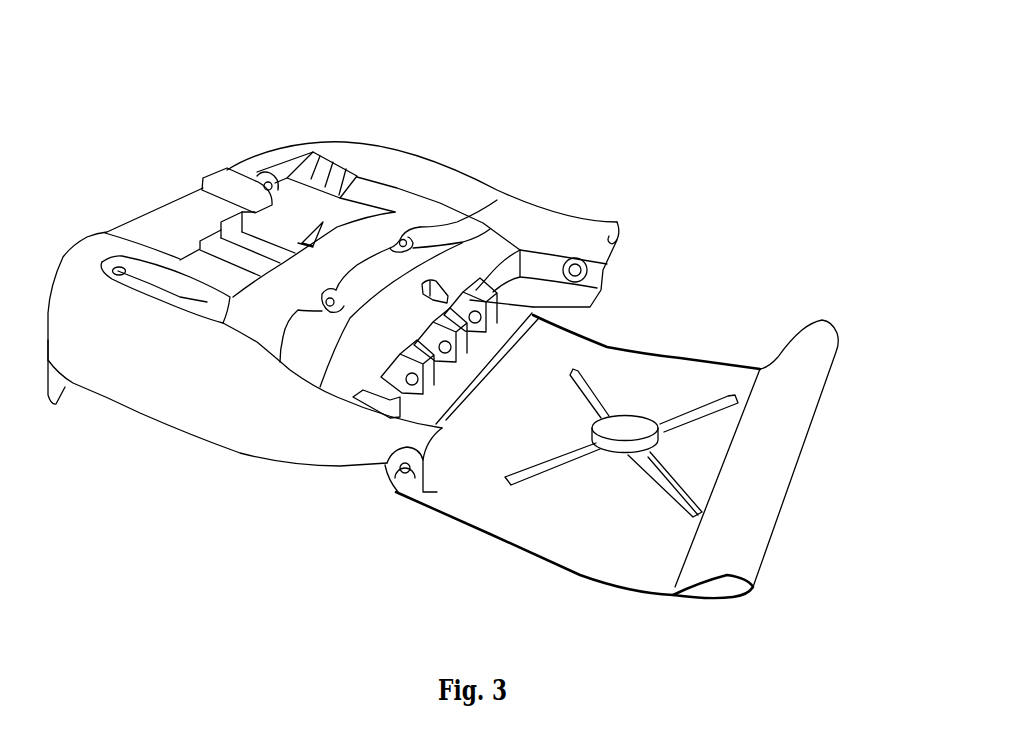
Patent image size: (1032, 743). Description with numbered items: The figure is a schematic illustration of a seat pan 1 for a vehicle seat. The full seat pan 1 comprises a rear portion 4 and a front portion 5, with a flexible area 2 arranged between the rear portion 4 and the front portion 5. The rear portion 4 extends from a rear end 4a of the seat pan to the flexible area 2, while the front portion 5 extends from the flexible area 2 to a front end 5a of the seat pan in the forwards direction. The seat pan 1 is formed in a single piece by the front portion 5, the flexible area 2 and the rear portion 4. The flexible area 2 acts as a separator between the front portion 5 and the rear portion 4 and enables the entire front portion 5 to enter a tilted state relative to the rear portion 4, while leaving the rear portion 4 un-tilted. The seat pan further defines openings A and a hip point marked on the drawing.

The seat pan 1 is at (609, 136).
The flexible area 2 is at (440, 413).
The rear portion 4 is at (639, 548).
The rear end 4a is at (790, 487).
The front portion 5 is at (202, 388).
The front end 5a is at (167, 200).
The openings A is at (587, 269).